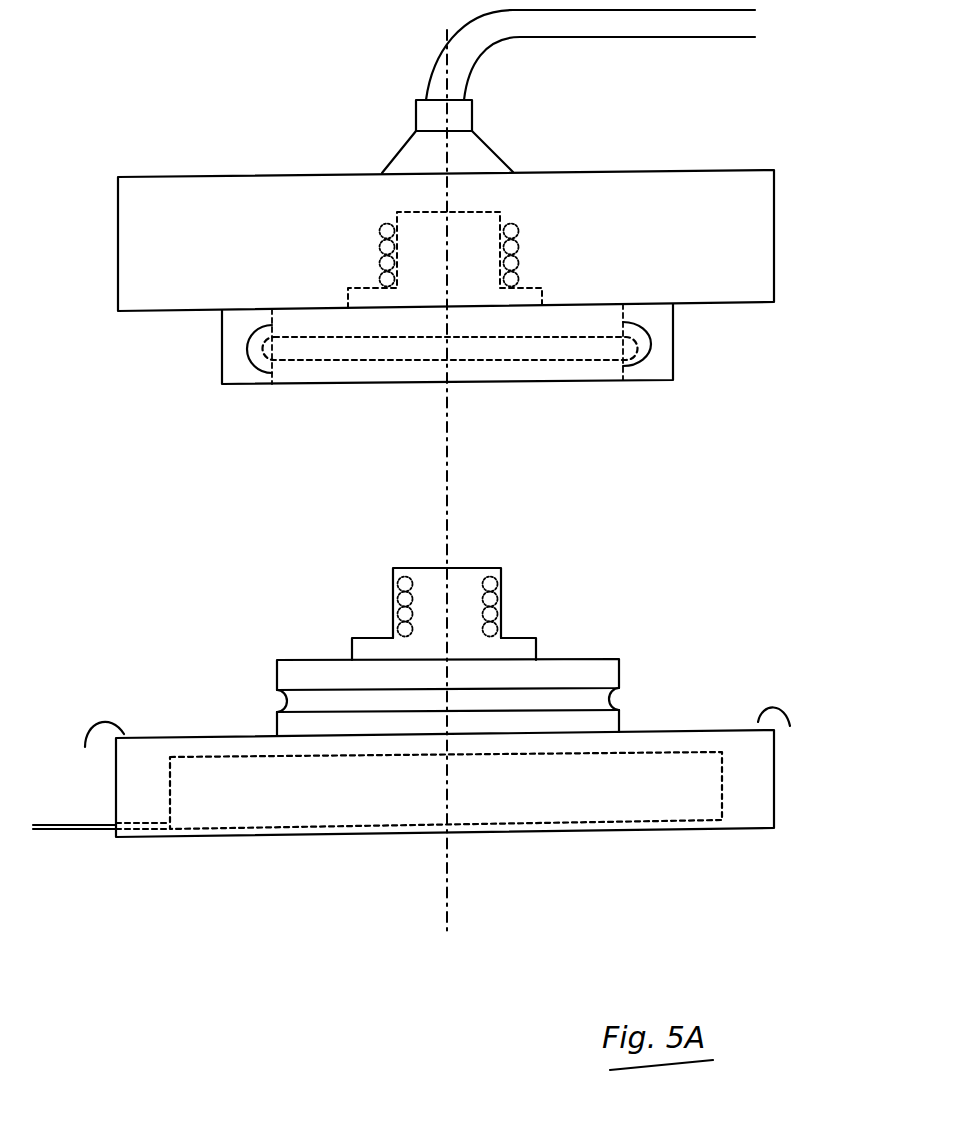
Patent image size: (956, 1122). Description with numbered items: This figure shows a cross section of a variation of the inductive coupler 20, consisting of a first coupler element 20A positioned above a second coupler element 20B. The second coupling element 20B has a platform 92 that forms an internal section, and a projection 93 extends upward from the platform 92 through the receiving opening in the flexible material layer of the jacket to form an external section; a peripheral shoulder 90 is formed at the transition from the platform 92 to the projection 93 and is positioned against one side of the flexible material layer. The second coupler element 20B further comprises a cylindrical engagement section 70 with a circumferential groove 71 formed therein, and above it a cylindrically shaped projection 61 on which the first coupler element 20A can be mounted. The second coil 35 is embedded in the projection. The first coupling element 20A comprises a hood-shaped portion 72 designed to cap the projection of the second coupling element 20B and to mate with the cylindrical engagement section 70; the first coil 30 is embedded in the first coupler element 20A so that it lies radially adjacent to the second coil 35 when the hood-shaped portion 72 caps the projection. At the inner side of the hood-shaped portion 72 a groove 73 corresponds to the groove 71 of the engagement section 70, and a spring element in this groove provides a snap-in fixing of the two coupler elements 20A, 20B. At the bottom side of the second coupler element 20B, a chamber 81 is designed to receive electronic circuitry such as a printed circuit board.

The inductive coupler 20 is at (268, 92).
The first coupler element 20A is at (787, 234).
The second coupler element 20B is at (789, 794).
The first coil 30 is at (373, 244).
The second coil 35 is at (397, 597).
The cylindrically shaped projection 61 is at (467, 585).
The cylindrical engagement section 70 is at (627, 658).
The circumferential groove 71 is at (616, 700).
The hood-shaped portion 72 is at (689, 348).
The groove 73 is at (650, 350).
The chamber 81 is at (282, 803).
The peripheral shoulder 90 is at (448, 744).
The platform 92 is at (116, 795).
The projection 93 is at (268, 723).